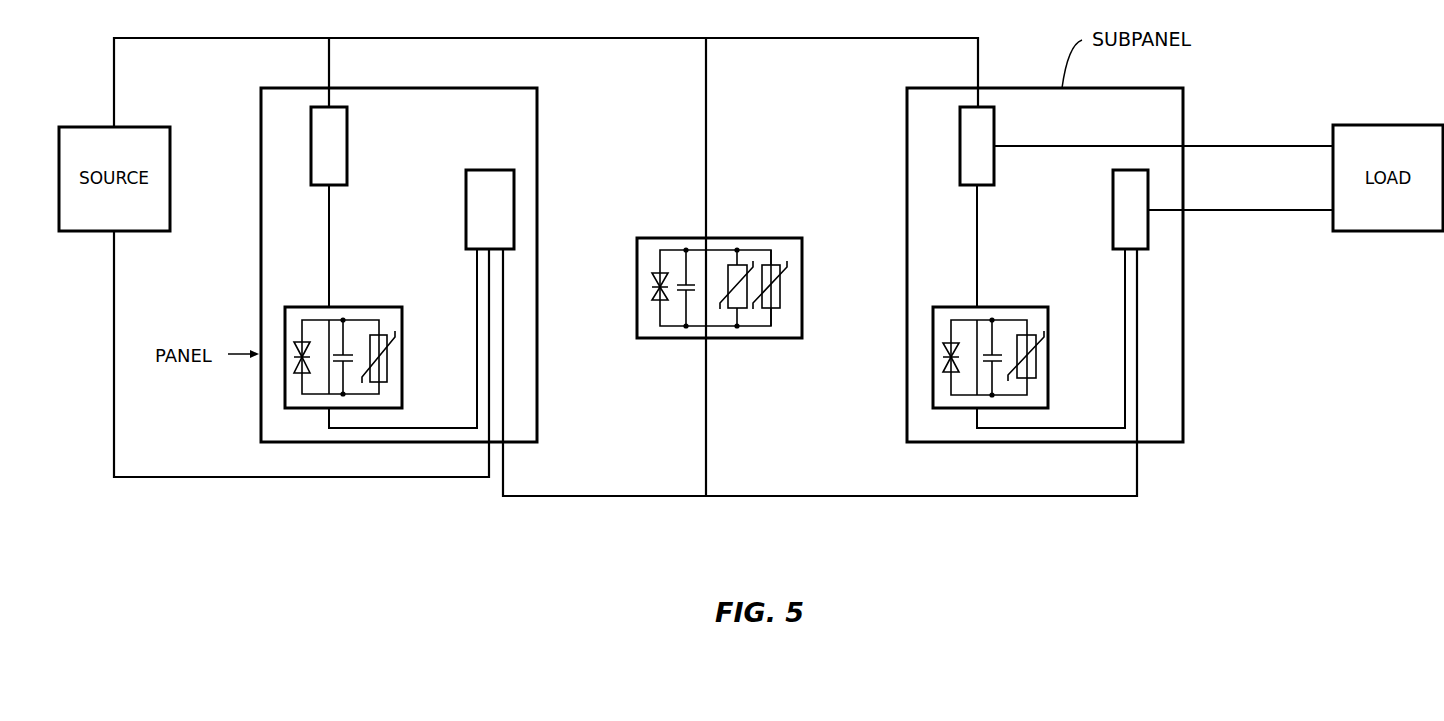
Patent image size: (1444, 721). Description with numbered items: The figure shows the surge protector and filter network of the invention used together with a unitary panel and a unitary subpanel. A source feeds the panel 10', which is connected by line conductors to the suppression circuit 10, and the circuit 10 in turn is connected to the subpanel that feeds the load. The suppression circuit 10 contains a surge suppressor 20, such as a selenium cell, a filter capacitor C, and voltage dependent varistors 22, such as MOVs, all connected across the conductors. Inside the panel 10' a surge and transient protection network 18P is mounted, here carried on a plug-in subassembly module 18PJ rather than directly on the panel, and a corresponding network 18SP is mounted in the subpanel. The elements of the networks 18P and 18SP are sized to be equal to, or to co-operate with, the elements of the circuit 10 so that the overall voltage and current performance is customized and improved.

The panel 10' is at (393, 258).
The suppression circuit 10 is at (708, 281).
The module 18PJ is at (298, 342).
The surge and transient protection network 18P is at (287, 389).
The network 18SP is at (1018, 262).
The surge suppressor 20 is at (655, 298).
The voltage dependent varistor 22 is at (743, 308).
The capacitor C is at (677, 283).